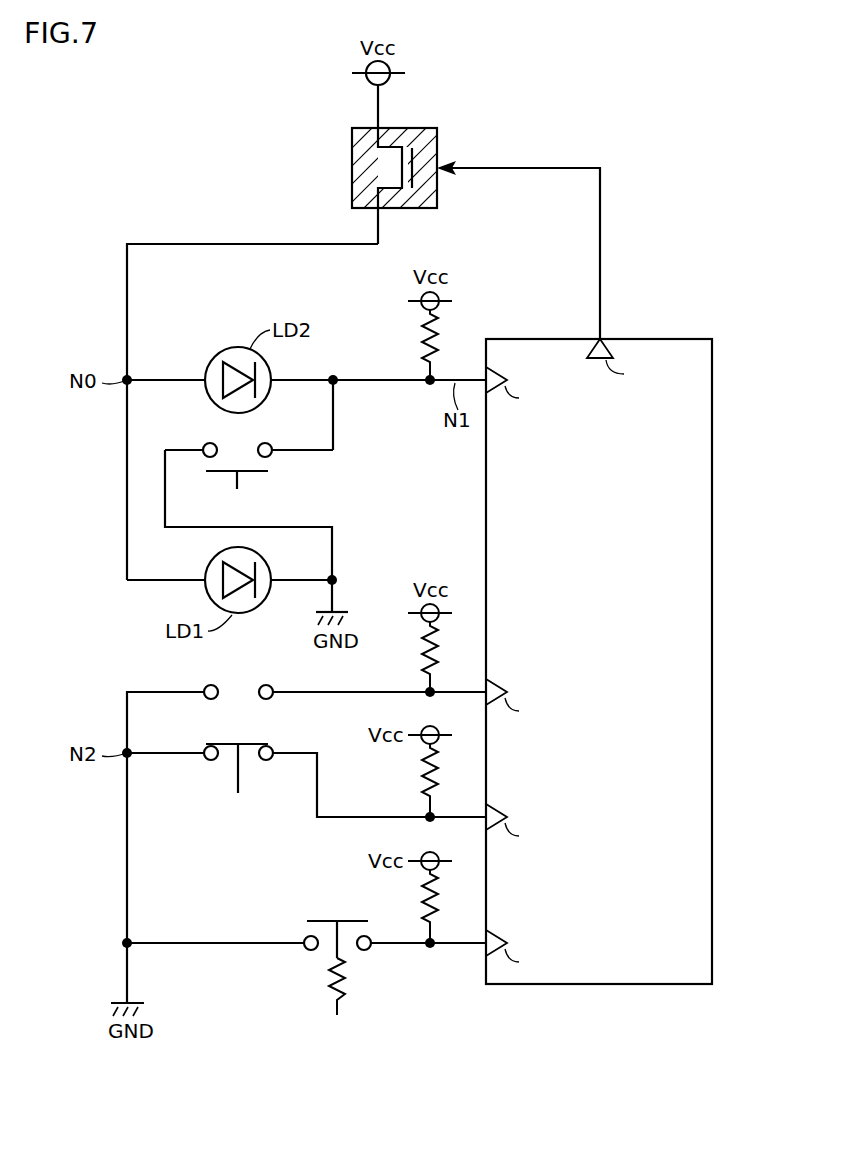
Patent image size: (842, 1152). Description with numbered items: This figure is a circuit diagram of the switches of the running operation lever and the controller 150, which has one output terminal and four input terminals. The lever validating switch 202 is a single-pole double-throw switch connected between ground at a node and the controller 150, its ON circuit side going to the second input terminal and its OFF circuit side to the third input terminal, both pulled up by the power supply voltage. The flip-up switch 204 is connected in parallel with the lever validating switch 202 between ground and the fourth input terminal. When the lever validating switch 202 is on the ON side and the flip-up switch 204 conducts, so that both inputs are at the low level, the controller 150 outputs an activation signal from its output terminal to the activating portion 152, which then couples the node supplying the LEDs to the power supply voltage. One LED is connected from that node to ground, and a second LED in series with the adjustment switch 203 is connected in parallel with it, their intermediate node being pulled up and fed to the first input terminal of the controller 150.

The activating portion 152 is at (452, 110).
The controller 150 is at (663, 339).
The adjustment switch 203 is at (296, 474).
The lever validating switch 202 is at (209, 787).
The flip-up switch 204 is at (375, 967).